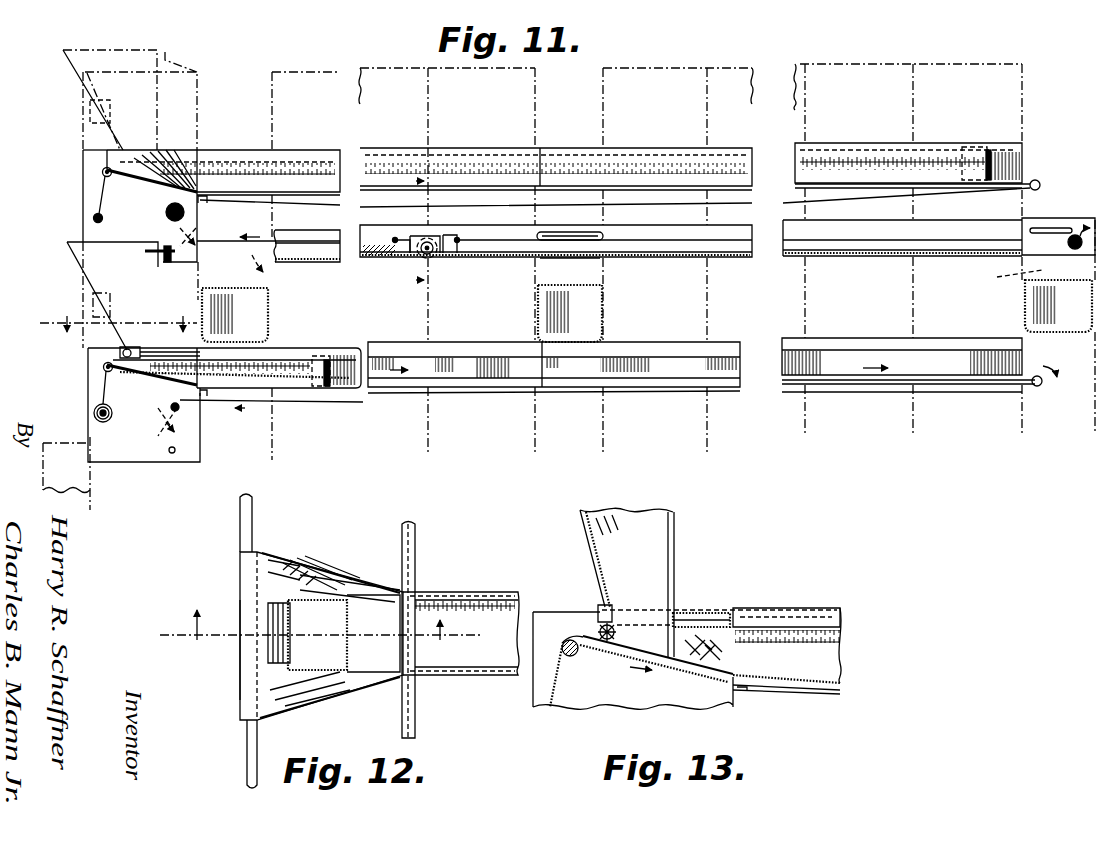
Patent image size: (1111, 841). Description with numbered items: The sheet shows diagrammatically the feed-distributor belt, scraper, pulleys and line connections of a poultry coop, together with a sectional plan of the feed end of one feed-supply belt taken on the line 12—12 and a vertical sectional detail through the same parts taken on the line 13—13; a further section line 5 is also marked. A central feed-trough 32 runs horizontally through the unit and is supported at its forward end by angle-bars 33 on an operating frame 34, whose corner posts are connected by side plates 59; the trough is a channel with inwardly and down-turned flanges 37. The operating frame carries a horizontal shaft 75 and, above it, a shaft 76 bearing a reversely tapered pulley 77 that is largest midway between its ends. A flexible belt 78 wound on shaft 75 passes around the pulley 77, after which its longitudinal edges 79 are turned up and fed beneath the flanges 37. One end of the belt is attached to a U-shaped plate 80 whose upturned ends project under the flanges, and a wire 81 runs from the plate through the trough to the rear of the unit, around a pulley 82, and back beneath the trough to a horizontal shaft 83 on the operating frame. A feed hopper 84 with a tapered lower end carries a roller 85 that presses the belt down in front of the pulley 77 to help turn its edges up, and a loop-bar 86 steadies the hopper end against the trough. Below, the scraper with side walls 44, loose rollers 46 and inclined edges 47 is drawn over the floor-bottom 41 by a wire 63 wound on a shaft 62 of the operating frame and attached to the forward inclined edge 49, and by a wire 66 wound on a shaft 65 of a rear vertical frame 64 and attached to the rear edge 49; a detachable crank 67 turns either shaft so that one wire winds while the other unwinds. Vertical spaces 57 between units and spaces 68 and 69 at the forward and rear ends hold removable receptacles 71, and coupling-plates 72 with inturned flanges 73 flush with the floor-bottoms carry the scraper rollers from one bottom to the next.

In FIG. 11, the section line 5- 5 is at (416, 216).
In FIG. 11, the line 12— 12 is at (118, 314).
In FIG. 12, the line 13— 13 is at (321, 628).
In FIG. 11, the feed-trough 32 is at (723, 388).
In FIG. 12, the feed-trough 32 is at (462, 592).
In FIG. 13, the feed-trough 32 is at (805, 690).
In FIG. 11, the angle-bar 33 is at (207, 203).
In FIG. 12, the angle-bar 33 is at (415, 555).
In FIG. 11, the operating frame 34 is at (84, 210).
In FIG. 11, the down-turned flange 37 is at (395, 340).
In FIG. 13, the down-turned flange 37 is at (775, 608).
In FIG. 11, the floor-bottom 41 is at (875, 256).
In FIG. 11, the side wall 44 is at (410, 255).
In FIG. 11, the roller 46 is at (418, 235).
In FIG. 11, the inclined edge 47 is at (380, 255).
In FIG. 11, the downwardly-inclined edge 49 is at (395, 238).
In FIG. 11, the space 57 is at (556, 85).
In FIG. 11, the side plate 59 is at (86, 158).
In FIG. 11, the shaft 62 is at (165, 262).
In FIG. 11, the wire 63 is at (255, 248).
In FIG. 11, the vertical frame 64 is at (1022, 268).
In FIG. 11, the shaft 65 is at (1074, 250).
In FIG. 11, the wire 66 is at (1068, 243).
In FIG. 11, the detachable crank 67 is at (178, 230).
In FIG. 11, the space 68 is at (153, 100).
In FIG. 11, the space 69 is at (947, 248).
In FIG. 11, the receptacle 71 is at (647, 311).
In FIG. 11, the coupling-plate 72 is at (568, 232).
In FIG. 11, the inturned flange 73 is at (578, 260).
In FIG. 11, the shaft 75 is at (94, 219).
In FIG. 12, the shaft 75 is at (240, 522).
In FIG. 11, the shaft 76 is at (100, 174).
In FIG. 12, the reversely tapered pulley 77 is at (238, 672).
In FIG. 11, the belt 78 is at (150, 178).
In FIG. 12, the belt 78 is at (255, 575).
In FIG. 13, the belt 78 is at (838, 660).
In FIG. 11, the longitudinal edge 79 is at (170, 150).
In FIG. 12, the longitudinal edge 79 is at (335, 580).
In FIG. 13, the longitudinal edge 79 is at (683, 613).
In FIG. 11, the U-shaped plate 80 is at (328, 358).
In FIG. 11, the wire 81 is at (1043, 168).
In FIG. 11, the pulley 82 is at (1037, 190).
In FIG. 11, the shaft 83 is at (166, 212).
In FIG. 11, the feed hopper 84 is at (108, 266).
In FIG. 12, the feed hopper 84 is at (305, 600).
In FIG. 13, the feed hopper 84 is at (590, 550).
In FIG. 11, the roller 85 is at (118, 352).
In FIG. 12, the roller 85 is at (268, 640).
In FIG. 13, the roller 85 is at (600, 630).
In FIG. 12, the loop-bar 86 is at (370, 598).
In FIG. 13, the loop-bar 86 is at (705, 613).